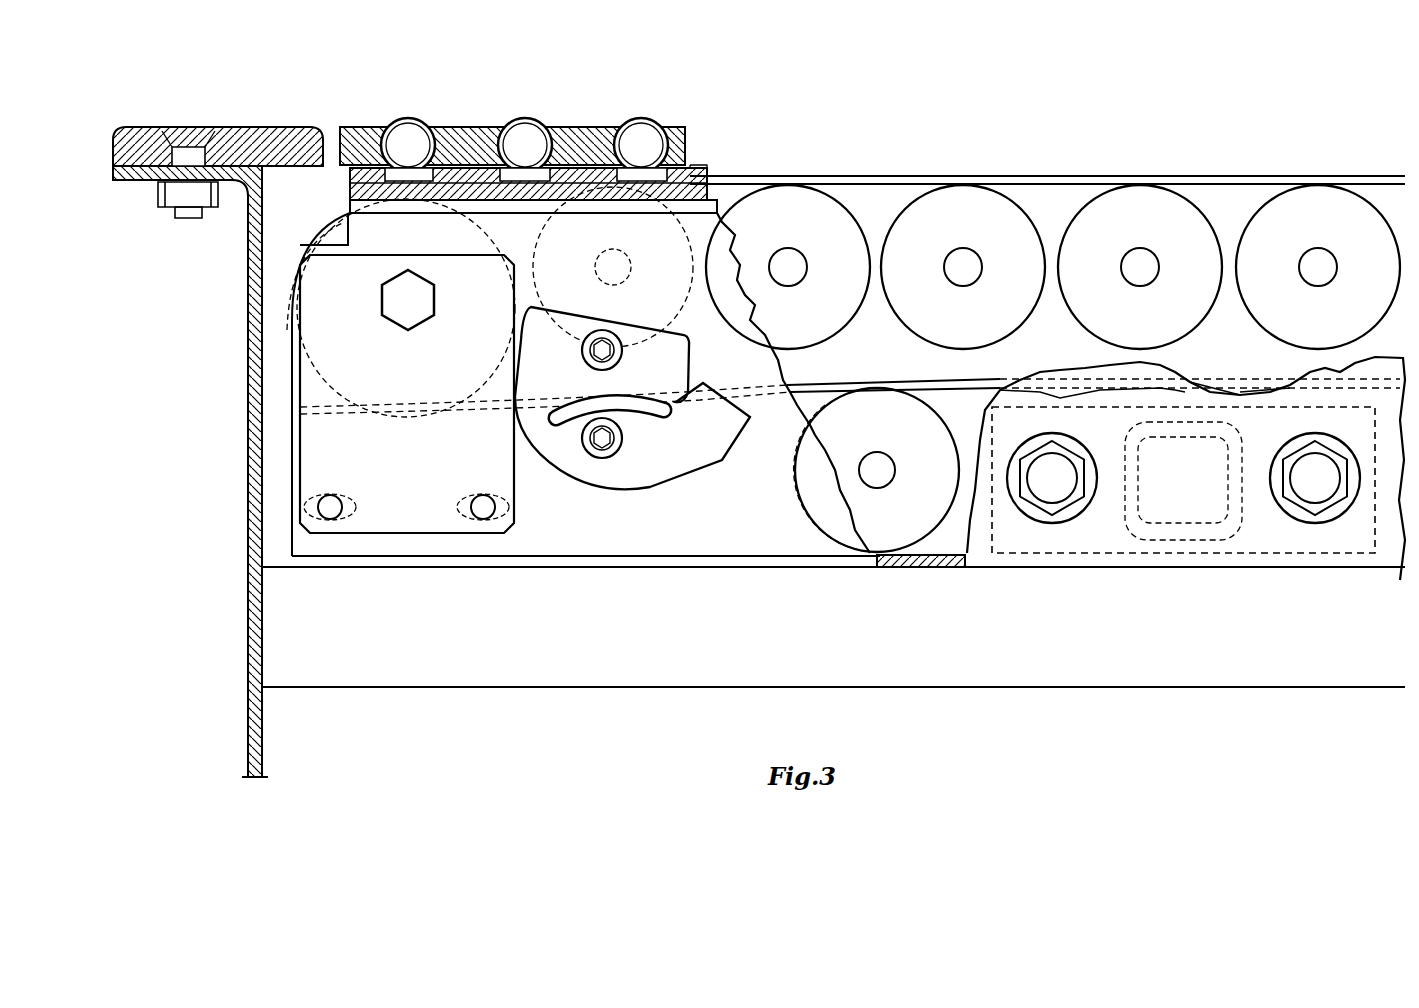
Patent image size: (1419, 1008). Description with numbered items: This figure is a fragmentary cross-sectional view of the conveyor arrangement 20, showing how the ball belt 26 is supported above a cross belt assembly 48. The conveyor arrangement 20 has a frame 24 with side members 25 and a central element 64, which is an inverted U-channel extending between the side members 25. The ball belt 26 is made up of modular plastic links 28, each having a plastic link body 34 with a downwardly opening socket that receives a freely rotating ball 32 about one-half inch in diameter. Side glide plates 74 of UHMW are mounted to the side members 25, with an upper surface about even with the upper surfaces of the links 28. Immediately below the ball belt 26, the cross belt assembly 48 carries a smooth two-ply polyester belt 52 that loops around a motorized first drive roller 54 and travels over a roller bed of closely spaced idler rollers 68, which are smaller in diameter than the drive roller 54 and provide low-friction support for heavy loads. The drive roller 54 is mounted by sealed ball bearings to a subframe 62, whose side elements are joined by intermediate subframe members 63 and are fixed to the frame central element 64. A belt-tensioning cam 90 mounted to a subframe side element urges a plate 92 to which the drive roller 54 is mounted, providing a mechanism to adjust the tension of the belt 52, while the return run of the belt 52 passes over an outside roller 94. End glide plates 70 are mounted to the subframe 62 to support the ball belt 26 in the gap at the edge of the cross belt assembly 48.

The conveyor arrangement 20 is at (855, 103).
The frame 24 is at (248, 458).
The side members 25 is at (248, 310).
The ball belt 26 is at (470, 127).
The modular plastic links 28 is at (592, 127).
The balls 32 is at (648, 127).
The link body 34 is at (368, 127).
The cross belt assembly 48 is at (1120, 176).
The belt 52 is at (1245, 176).
The first drive roller 54 is at (340, 218).
The subframe 62 is at (983, 688).
The intermediate subframe members 63 is at (1183, 545).
The central element 64 is at (1190, 688).
The idler rollers 68 is at (852, 281).
The end glide plates 70 is at (700, 168).
The side glide plates 74 is at (248, 127).
The belt-tensioning cam 90 is at (615, 487).
The plate 92 is at (415, 533).
The outside roller 94 is at (937, 484).